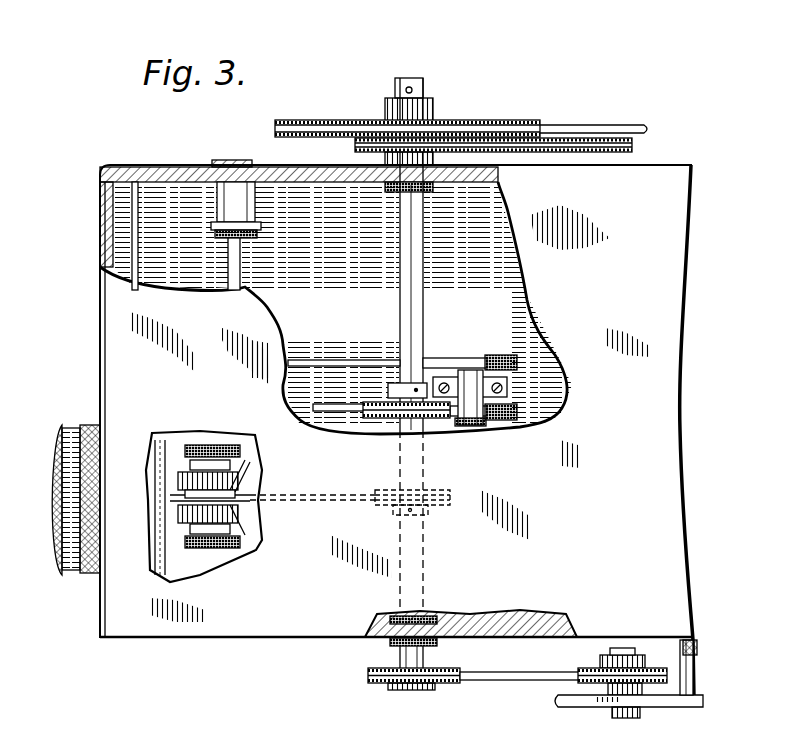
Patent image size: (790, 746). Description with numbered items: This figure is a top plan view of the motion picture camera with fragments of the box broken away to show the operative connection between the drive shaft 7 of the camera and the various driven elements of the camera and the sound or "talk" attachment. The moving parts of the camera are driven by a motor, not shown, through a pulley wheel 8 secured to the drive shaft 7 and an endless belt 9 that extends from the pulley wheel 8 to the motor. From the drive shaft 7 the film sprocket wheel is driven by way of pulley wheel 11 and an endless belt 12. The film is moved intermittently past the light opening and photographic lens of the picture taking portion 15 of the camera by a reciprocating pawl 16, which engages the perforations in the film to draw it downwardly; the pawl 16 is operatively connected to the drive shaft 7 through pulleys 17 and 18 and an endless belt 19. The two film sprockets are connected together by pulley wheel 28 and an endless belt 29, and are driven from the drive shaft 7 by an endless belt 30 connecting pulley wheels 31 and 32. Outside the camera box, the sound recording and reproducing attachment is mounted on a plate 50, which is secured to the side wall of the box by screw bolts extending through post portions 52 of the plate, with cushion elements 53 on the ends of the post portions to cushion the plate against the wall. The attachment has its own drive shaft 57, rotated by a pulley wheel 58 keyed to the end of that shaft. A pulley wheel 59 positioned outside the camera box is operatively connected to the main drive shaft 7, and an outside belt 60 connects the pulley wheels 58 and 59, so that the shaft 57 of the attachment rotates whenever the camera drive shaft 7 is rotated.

The drive shaft 7 is at (424, 293).
The pulley wheel 8 is at (506, 118).
The endless belt 9 is at (598, 125).
The pulley wheel 11 is at (391, 385).
The endless belt 12 is at (318, 406).
The picture taking portion 15 is at (74, 572).
The reciprocating pawl 16 is at (196, 448).
The pulley 17 is at (240, 492).
The pulley 18 is at (454, 508).
The endless belt 19 is at (285, 502).
The pulley wheel 28 is at (498, 356).
The endless belt 29 is at (325, 362).
The endless belt 30 is at (460, 428).
The pulley wheel 31 is at (379, 420).
The pulley wheel 32 is at (508, 408).
The plate 50 is at (577, 700).
The post portions 52 is at (700, 677).
The cushion elements 53 is at (700, 652).
The drive shaft 57 is at (632, 720).
The pulley wheel 58 is at (650, 668).
The pulley wheel 59 is at (377, 684).
The outside belt 60 is at (517, 680).